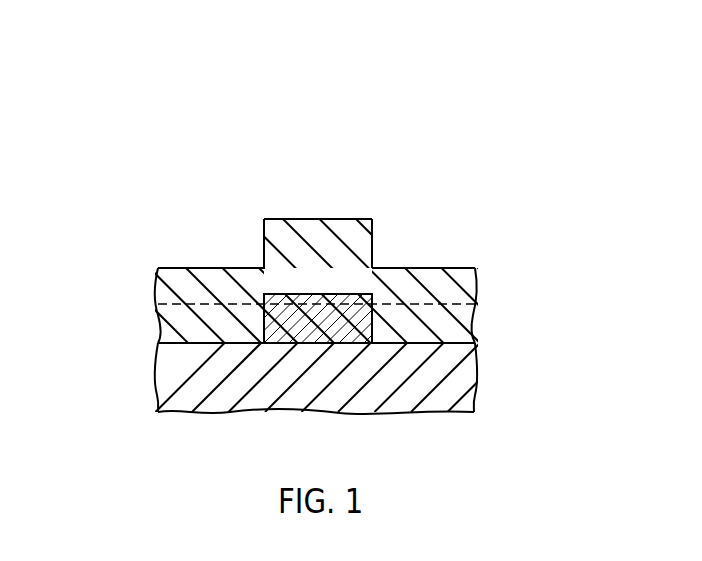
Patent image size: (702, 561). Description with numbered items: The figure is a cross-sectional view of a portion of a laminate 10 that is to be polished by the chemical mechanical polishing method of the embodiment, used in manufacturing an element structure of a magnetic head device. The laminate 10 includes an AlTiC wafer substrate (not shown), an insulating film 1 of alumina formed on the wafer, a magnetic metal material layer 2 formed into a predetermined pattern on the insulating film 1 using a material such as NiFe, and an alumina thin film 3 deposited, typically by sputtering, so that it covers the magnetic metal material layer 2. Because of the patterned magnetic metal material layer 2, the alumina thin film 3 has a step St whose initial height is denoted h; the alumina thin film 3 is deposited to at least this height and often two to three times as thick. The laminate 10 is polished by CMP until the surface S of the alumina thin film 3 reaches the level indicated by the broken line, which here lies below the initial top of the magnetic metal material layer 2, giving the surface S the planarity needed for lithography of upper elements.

The insulating film 1 is at (158, 367).
The magnetic metal material layer 2 is at (264, 325).
The alumina thin film 3 is at (158, 285).
The laminate 10 is at (257, 197).
The step St is at (373, 242).
The surface S is at (420, 268).
The height of the step h is at (484, 219).